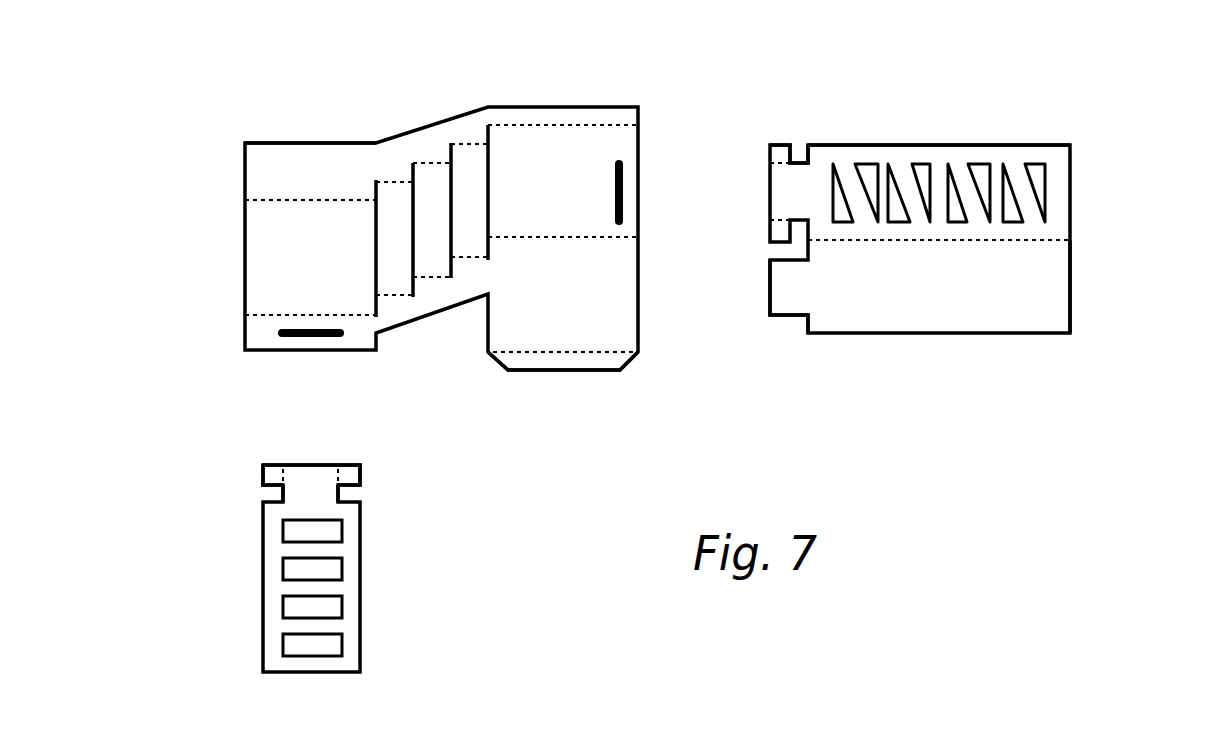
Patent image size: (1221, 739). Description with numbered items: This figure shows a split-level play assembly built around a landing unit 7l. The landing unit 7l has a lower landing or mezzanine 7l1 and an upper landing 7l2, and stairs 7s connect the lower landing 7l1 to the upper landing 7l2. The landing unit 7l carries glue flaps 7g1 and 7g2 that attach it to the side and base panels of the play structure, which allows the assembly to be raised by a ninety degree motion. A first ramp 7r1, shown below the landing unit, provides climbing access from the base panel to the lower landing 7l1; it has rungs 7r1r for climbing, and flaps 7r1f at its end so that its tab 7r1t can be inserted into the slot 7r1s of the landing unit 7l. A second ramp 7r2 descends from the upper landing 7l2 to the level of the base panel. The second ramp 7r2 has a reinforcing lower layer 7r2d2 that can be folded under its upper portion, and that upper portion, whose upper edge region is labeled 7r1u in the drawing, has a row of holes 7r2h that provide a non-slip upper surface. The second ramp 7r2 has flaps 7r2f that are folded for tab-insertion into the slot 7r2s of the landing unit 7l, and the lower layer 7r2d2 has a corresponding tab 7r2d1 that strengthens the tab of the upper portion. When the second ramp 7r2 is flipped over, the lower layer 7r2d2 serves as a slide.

The landing unit 7l is at (476, 248).
The lower landing 7l1 is at (310, 248).
The upper landing 7l2 is at (563, 238).
The glue flap 7g1 is at (330, 166).
The glue flap 7g2 is at (545, 362).
The stairs 7s is at (430, 262).
The slot 7r1s is at (315, 337).
The slot 7r2s is at (623, 183).
The first ramp 7r1 is at (312, 558).
The flaps 7r1f is at (266, 481).
The tab 7r1t is at (318, 490).
The rungs 7r1r is at (328, 550).
The first rib upper edge 7r1u is at (1016, 155).
The second ramp 7r2 is at (942, 210).
The flaps 7r2f is at (768, 141).
The holes 7r2h is at (1047, 172).
The tab 7r2d1 is at (790, 290).
The reinforcing lower layer 7r2d2 is at (1053, 272).